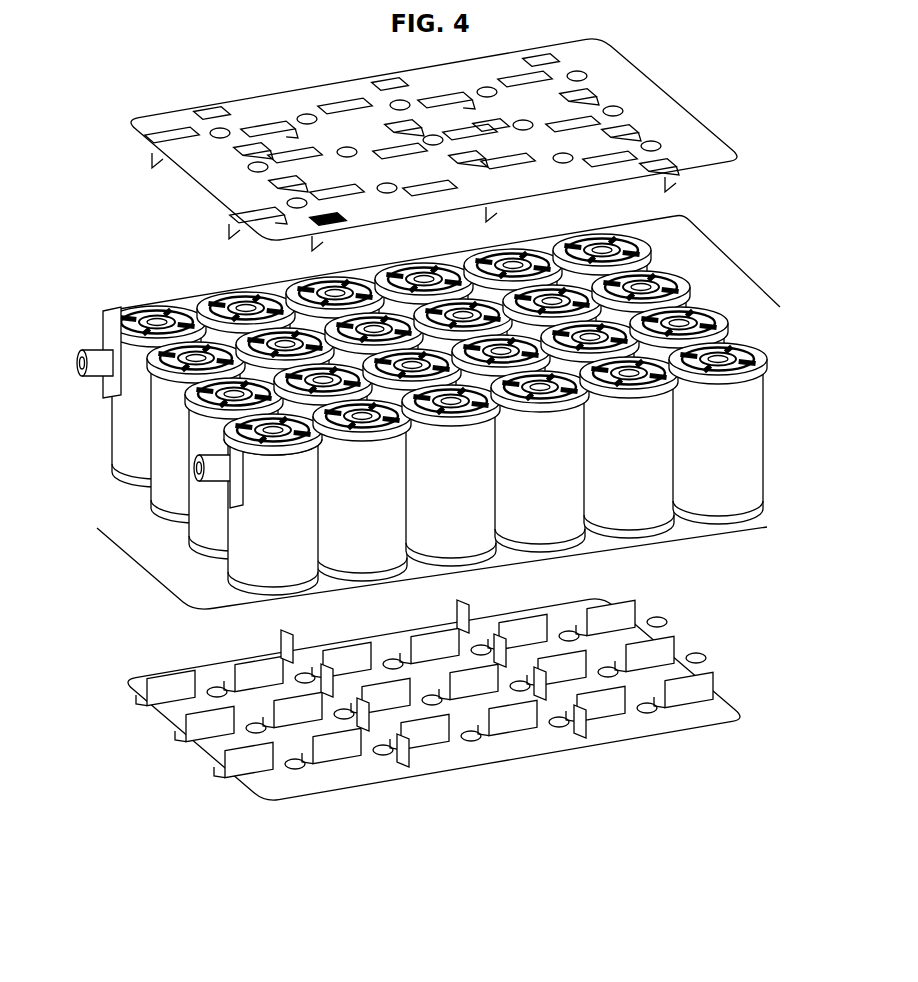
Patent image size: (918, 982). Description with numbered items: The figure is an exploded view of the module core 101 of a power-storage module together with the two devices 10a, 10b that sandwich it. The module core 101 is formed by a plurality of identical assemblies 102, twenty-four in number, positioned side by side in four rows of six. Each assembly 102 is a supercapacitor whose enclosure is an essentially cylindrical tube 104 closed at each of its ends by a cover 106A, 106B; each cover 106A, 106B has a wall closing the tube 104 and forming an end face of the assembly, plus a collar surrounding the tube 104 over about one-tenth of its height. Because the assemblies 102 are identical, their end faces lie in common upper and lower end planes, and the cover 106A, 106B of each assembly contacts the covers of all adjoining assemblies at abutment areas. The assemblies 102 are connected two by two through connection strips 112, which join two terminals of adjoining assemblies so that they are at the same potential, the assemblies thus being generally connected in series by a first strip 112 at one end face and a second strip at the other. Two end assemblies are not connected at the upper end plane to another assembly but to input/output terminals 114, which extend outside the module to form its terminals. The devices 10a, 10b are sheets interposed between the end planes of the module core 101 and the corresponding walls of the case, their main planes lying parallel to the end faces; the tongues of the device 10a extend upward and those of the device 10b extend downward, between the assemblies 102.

The device 10a is at (707, 641).
The device 10b is at (707, 78).
The module core 101 is at (437, 455).
The assembly 102 is at (731, 449).
The tube 104 is at (172, 568).
The cover 106A is at (277, 590).
The cover 106B is at (278, 463).
The connection strip 112 is at (722, 318).
The input/output terminal 114 is at (104, 336).